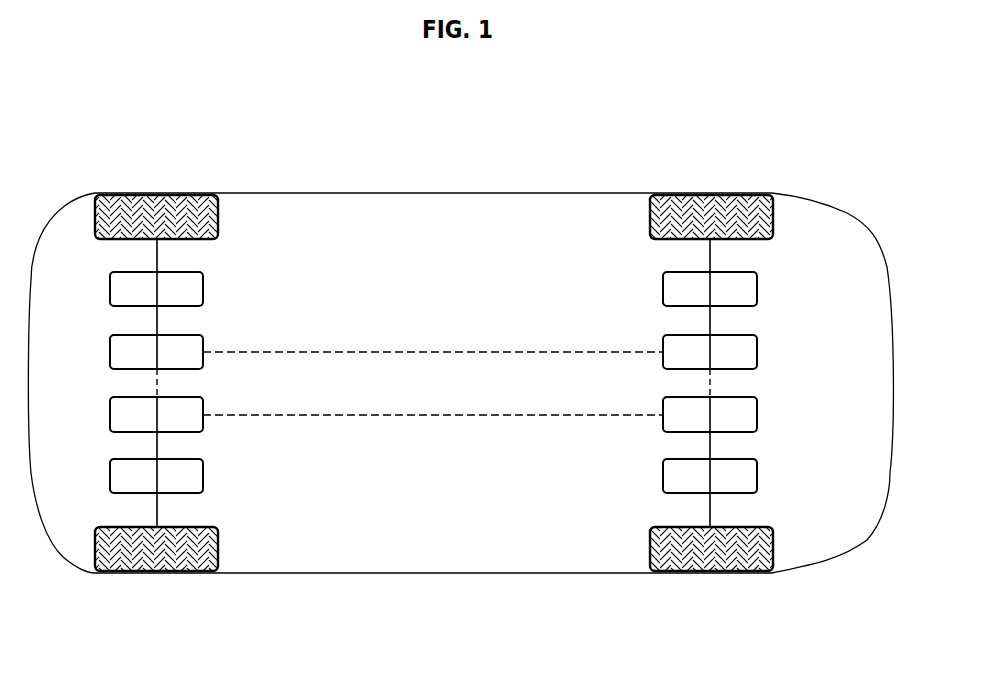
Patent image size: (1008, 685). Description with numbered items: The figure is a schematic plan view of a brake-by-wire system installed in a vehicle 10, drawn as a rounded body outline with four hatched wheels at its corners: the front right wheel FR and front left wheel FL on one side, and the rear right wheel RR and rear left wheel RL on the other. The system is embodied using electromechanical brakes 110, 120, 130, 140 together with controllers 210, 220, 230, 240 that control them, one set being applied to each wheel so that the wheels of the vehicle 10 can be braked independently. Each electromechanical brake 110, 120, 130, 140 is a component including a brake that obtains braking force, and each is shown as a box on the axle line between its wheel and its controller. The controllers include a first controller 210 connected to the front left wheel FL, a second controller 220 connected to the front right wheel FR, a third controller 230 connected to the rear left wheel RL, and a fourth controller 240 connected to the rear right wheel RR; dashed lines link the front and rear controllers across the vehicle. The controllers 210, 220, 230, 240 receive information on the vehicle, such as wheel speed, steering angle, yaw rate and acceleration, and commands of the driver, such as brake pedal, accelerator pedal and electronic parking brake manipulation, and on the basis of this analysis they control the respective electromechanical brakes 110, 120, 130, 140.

The vehicle 10 is at (272, 172).
The electromechanical brake 110 is at (203, 478).
The electromechanical brake 120 is at (203, 282).
The electromechanical brake 130 is at (757, 478).
The electromechanical brake 140 is at (757, 282).
The first controller 210 is at (203, 430).
The second controller 220 is at (203, 337).
The third controller 230 is at (757, 430).
The fourth controller 240 is at (757, 337).
The front right wheel FR is at (159, 195).
The front left wheel FL is at (160, 573).
The rear right wheel RR is at (690, 195).
The rear left wheel RL is at (690, 573).